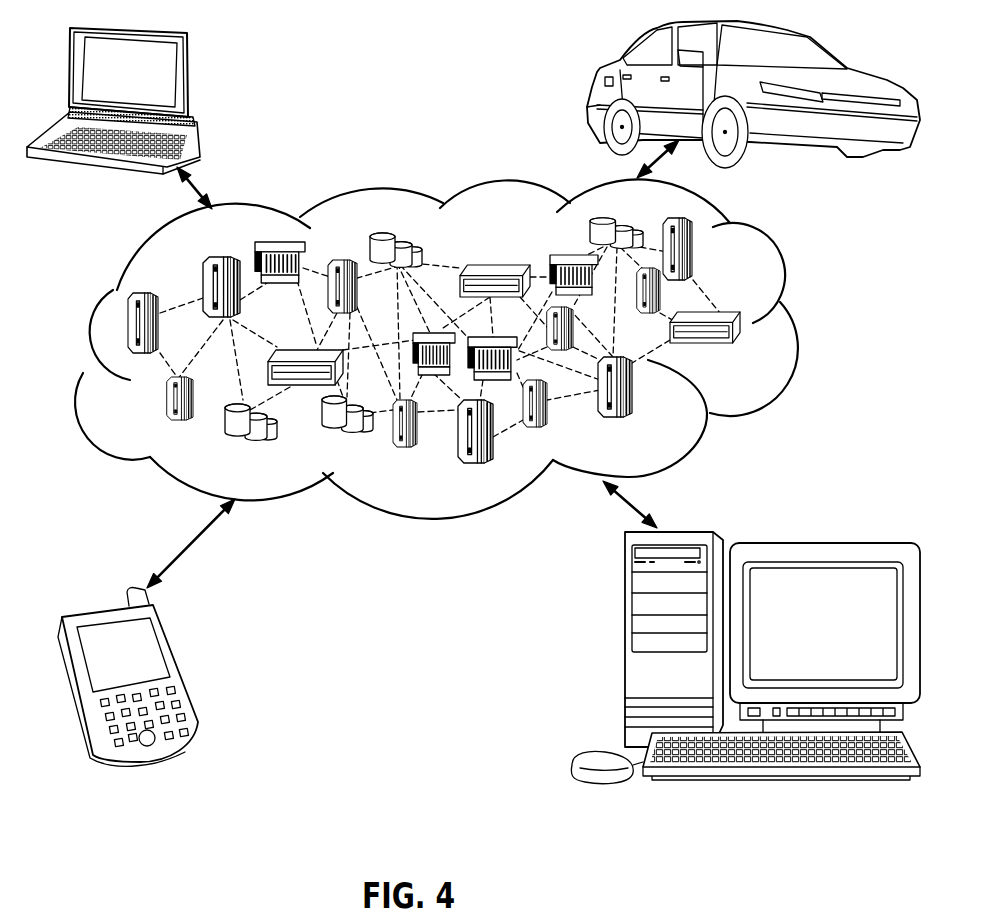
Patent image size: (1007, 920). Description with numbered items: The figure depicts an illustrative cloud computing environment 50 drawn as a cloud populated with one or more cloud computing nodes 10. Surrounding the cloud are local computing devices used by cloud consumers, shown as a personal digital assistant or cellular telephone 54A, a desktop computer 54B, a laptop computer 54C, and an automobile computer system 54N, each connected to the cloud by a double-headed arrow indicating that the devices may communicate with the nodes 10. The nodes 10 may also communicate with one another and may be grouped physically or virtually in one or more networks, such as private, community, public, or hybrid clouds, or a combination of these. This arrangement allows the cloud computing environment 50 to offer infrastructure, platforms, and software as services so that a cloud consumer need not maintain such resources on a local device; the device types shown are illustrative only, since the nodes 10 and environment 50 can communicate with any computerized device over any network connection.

The cloud computing node 10 is at (760, 347).
The cloud computing environment 50 is at (787, 283).
The personal digital assistant or cellular telephone 54A is at (180, 667).
The desktop computer 54B is at (622, 647).
The laptop computer 54C is at (193, 75).
The automobile computer system 54N is at (598, 80).